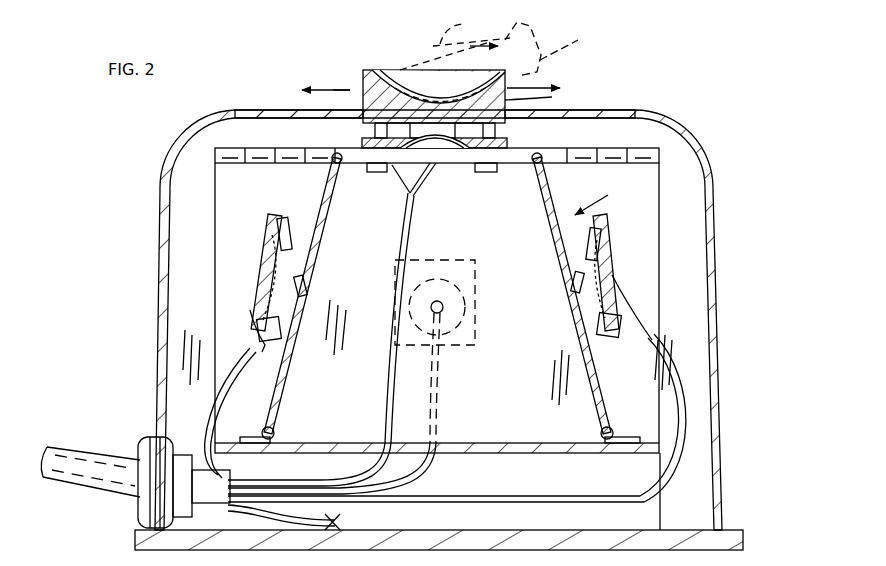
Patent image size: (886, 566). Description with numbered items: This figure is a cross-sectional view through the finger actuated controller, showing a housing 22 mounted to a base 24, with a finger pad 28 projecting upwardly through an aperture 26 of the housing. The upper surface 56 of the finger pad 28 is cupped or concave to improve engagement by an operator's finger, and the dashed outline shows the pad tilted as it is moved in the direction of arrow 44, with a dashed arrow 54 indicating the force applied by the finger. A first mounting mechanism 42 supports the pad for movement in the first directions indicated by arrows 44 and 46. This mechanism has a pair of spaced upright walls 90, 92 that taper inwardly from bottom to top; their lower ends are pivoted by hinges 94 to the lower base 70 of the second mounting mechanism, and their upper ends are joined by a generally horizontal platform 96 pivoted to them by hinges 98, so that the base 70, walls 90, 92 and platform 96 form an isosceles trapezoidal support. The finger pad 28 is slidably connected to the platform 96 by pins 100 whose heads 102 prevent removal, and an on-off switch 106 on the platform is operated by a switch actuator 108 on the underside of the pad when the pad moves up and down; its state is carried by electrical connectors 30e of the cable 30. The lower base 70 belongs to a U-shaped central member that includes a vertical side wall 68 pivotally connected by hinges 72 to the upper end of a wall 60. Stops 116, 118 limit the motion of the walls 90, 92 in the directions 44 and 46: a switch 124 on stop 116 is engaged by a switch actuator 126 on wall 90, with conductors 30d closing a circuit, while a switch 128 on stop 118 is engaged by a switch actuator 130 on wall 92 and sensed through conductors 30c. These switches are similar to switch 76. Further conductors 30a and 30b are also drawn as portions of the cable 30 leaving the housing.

The housing 22 is at (714, 216).
The base 24 is at (743, 535).
The aperture 26 is at (340, 110).
The finger pad 28 is at (570, 45).
The electrical cable 30 is at (85, 455).
The cable branch 30a is at (406, 465).
The cable branch 30b is at (262, 519).
The conductors 30c is at (232, 376).
The electrical conductors 30d is at (580, 496).
The electrical connectors 30e is at (386, 402).
The first mounting mechanism 42 is at (606, 195).
The arrow 44 is at (552, 86).
The arrow 46 is at (333, 90).
The dashed arrow 54 is at (452, 30).
The upper surface 56 is at (395, 85).
The wall 60 is at (660, 504).
The vertical side wall 68 is at (532, 361).
The lower base 70 is at (520, 443).
The hinges 72 is at (220, 155).
The switch 76 is at (441, 300).
The upright wall 90 is at (555, 240).
The upright wall 92 is at (318, 236).
The hinges 94 is at (276, 432).
The platform 96 is at (437, 150).
The hinges 98 is at (333, 152).
The pins 100 is at (375, 132).
The heads 102 is at (377, 172).
The on-off switch 106 is at (420, 100).
The switch actuator 108 is at (545, 98).
The stop 116 is at (608, 244).
The stop 118 is at (272, 232).
The switch 124 is at (612, 267).
The switch actuator 126 is at (572, 280).
The switch 128 is at (262, 300).
The switch actuator 130 is at (308, 282).